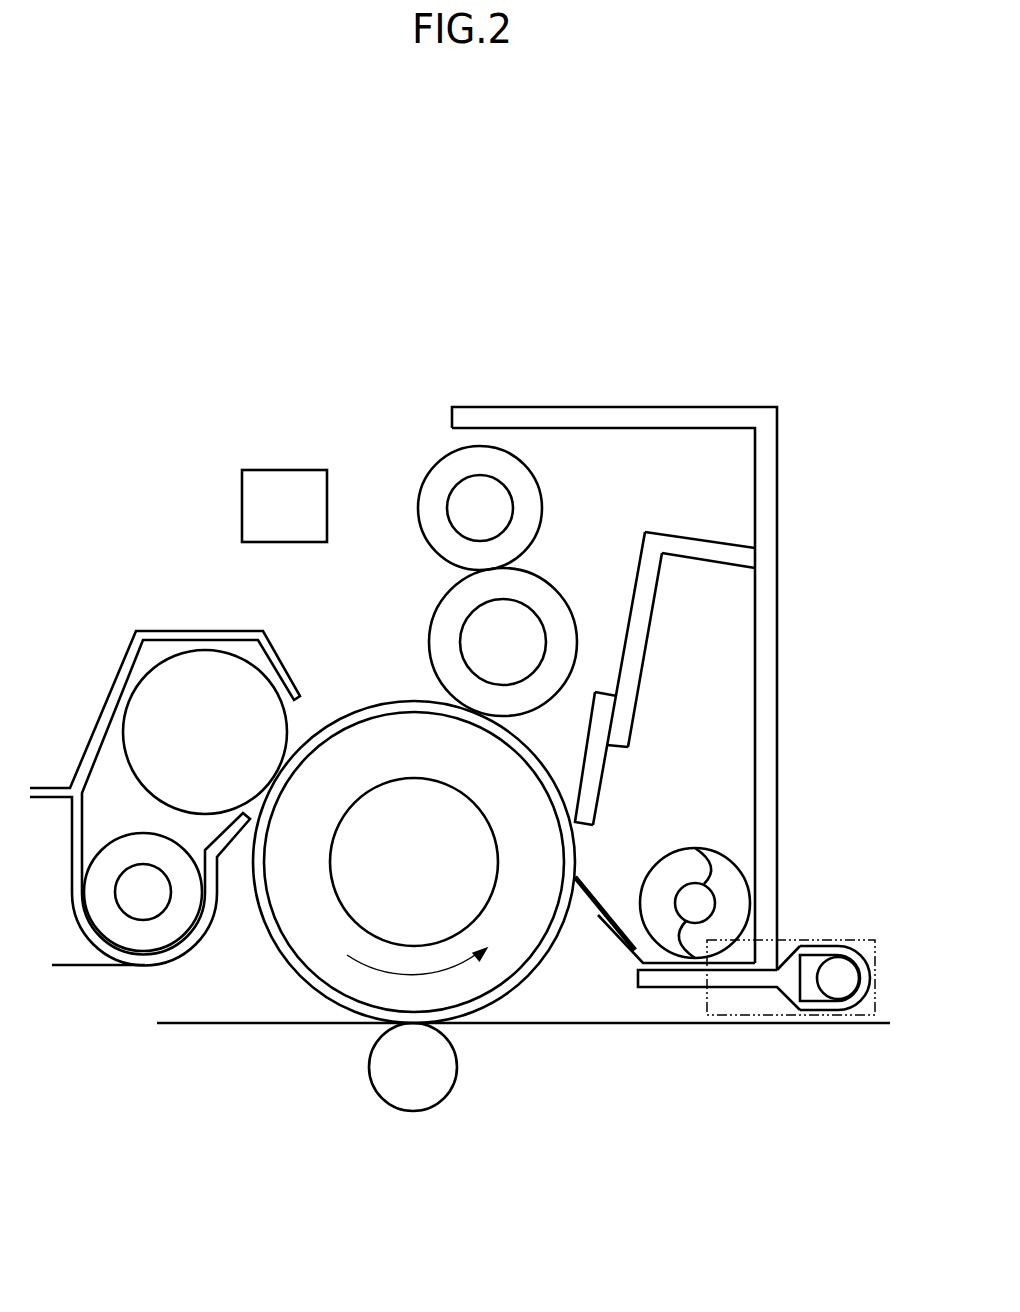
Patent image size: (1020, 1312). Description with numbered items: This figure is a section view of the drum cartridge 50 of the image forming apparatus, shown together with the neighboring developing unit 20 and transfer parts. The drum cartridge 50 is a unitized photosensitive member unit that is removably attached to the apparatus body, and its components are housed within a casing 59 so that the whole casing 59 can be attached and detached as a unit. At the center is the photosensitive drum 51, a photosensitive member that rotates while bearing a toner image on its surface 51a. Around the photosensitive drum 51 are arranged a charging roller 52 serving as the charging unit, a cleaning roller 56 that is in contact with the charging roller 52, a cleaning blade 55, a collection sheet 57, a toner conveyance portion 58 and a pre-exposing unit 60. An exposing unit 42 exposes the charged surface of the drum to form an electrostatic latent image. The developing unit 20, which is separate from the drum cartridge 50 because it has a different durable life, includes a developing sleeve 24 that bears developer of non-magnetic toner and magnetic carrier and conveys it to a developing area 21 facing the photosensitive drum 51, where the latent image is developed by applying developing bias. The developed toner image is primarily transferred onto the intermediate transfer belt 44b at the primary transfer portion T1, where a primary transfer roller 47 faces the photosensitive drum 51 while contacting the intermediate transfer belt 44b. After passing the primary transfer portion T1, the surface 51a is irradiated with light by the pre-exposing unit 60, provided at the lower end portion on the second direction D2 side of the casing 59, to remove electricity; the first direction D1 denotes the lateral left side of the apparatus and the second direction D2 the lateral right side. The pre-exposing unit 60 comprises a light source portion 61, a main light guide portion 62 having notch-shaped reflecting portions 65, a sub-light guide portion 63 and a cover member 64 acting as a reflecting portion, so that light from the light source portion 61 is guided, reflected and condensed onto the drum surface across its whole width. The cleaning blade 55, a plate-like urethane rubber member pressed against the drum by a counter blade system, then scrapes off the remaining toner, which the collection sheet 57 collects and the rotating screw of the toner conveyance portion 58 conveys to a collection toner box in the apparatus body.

The developing unit 20 is at (188, 606).
The developing area 21 is at (309, 714).
The developing sleeve 24 is at (225, 660).
The exposing unit 42 is at (285, 468).
The intermediate transfer belt 44b is at (208, 1027).
The primary transfer roller 47 is at (452, 1083).
The drum cartridge 50 is at (671, 352).
The photosensitive drum 51 is at (250, 960).
The surface of photosensitive drum 51a is at (383, 704).
The charging roller 52 is at (422, 638).
The cleaning blade 55 is at (597, 807).
The cleaning roller 56 is at (423, 490).
The collection sheet 57 is at (592, 898).
The toner conveyance portion 58 is at (717, 857).
The casing 59 is at (775, 507).
The pre-exposing unit 60 is at (821, 1098).
The light source portion 61 is at (748, 1012).
The main light guide portion 62 is at (840, 990).
The sub-light guide portion 63 is at (675, 988).
The cover member 64 is at (850, 947).
The reflecting portion 65 is at (815, 982).
The primary transfer portion T1 is at (360, 1035).
The first direction D1 is at (477, 1193).
The second direction D2 is at (502, 1195).